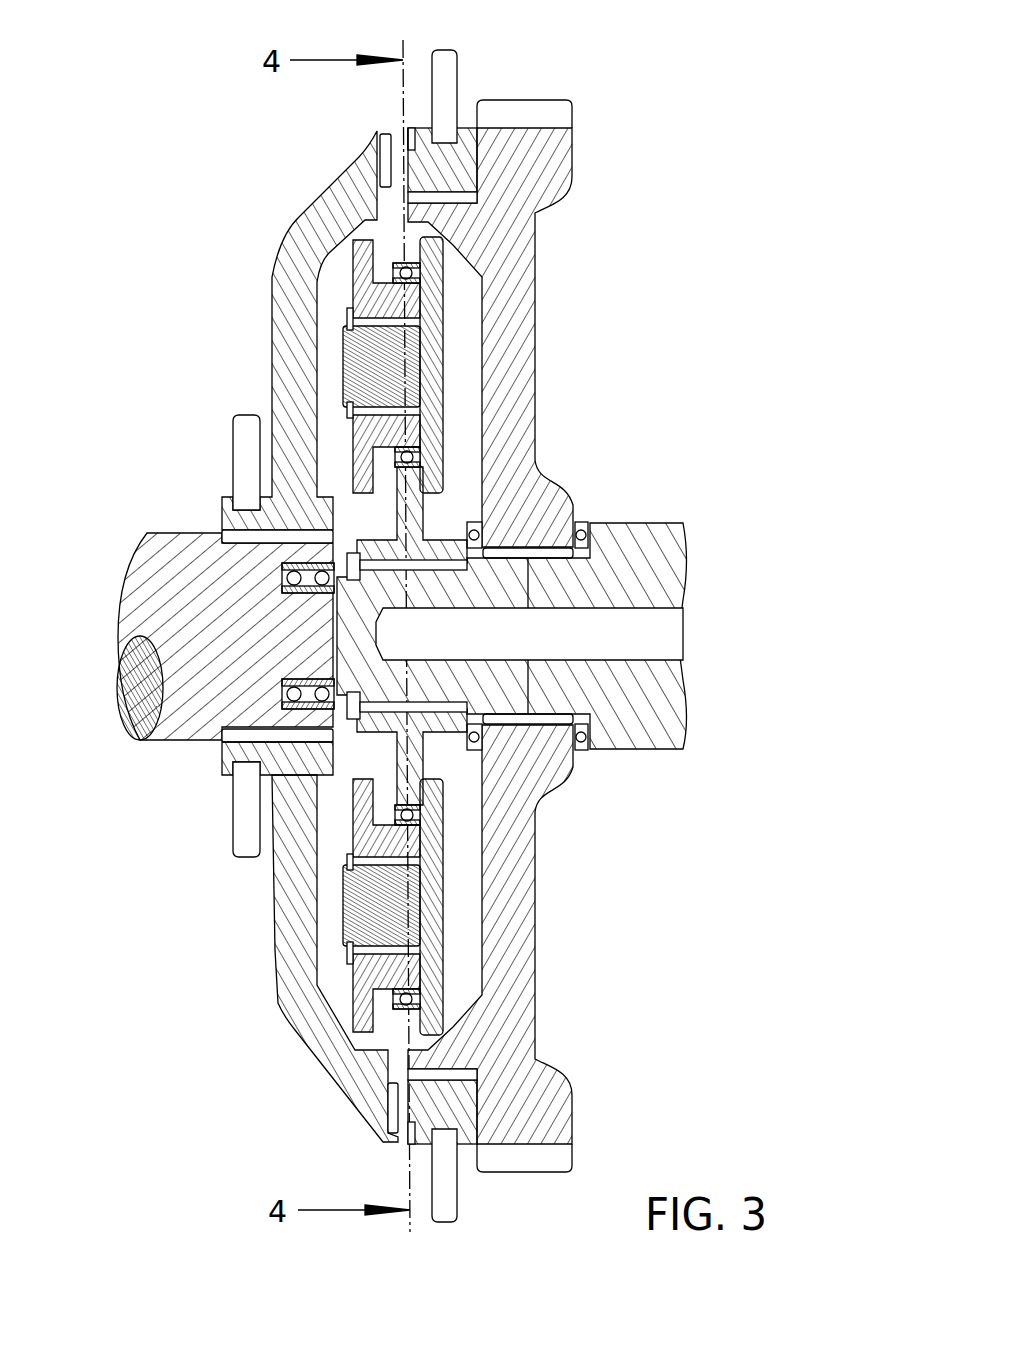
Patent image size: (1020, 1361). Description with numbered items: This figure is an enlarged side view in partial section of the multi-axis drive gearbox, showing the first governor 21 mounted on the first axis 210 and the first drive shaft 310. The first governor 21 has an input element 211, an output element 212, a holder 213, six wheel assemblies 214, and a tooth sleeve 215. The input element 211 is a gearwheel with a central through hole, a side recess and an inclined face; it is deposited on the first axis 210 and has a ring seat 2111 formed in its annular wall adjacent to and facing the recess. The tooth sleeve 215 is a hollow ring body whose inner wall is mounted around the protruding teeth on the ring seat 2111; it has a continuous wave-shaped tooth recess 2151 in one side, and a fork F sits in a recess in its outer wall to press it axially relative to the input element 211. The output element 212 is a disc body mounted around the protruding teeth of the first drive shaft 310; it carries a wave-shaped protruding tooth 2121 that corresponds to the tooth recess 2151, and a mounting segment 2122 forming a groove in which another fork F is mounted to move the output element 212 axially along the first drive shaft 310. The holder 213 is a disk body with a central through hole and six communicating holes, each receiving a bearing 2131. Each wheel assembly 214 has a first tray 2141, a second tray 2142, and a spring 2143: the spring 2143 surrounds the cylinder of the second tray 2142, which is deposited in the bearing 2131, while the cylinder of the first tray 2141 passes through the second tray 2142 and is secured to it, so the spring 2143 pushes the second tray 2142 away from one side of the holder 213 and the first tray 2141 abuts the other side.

The first governor 21 is at (295, 183).
The first axis 210 is at (503, 590).
The input element 211 is at (543, 177).
The ring seat 2111 is at (463, 195).
The output element 212 is at (290, 268).
The protruding tooth 2121 is at (375, 138).
The mounting segment 2122 is at (247, 750).
The holder 213 is at (440, 740).
The bearing 2131 is at (413, 453).
The wheel assembly 214 is at (400, 366).
The first tray 2141 is at (417, 358).
The second tray 2142 is at (347, 327).
The spring 2143 is at (373, 292).
The tooth sleeve 215 is at (467, 140).
The tooth recess 2151 is at (413, 128).
The first drive shaft 310 is at (158, 572).
The fork F is at (457, 67).